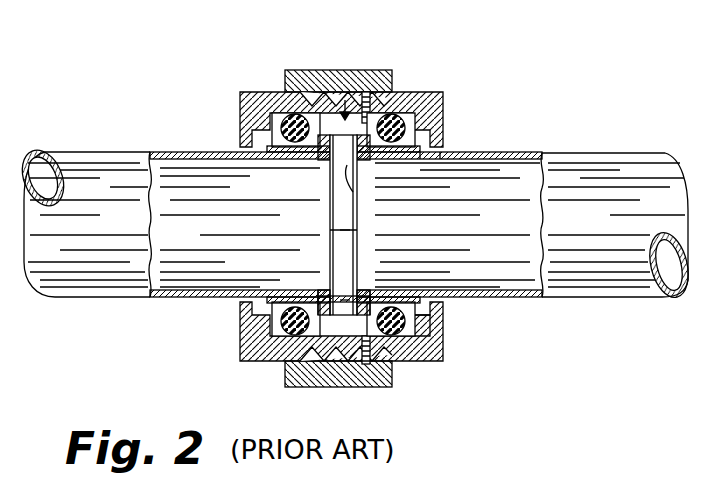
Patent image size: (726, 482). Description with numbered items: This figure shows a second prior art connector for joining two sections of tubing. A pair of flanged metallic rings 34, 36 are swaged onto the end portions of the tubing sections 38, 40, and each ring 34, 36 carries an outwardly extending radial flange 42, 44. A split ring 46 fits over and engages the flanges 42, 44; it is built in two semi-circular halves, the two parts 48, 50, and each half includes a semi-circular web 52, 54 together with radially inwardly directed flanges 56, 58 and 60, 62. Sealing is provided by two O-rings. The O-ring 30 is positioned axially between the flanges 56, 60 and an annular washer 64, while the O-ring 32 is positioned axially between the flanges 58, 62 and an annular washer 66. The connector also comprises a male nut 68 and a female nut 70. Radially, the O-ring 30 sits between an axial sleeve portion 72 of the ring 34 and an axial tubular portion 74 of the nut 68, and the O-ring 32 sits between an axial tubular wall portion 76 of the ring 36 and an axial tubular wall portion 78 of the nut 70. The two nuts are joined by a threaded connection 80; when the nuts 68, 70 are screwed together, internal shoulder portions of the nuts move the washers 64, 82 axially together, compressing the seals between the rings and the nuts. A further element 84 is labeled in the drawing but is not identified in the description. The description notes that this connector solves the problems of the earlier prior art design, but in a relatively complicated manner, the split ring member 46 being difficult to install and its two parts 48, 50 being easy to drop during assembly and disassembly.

The O-ring 30 is at (292, 118).
The O-ring 32 is at (390, 117).
The flanged metallic ring 34 is at (311, 300).
The flanged metallic ring 36 is at (390, 300).
The tubing section 38 is at (117, 300).
The tubing section 40 is at (565, 298).
The radial flange 42 is at (333, 300).
The radial flange 44 is at (357, 192).
The split ring 46 is at (347, 118).
The part of ring member 48 is at (347, 209).
The part of ring member 50 is at (345, 242).
The semi-circular web 52 is at (323, 92).
The semi-circular web 54 is at (337, 333).
The radially inwardly directed flange 56 is at (330, 193).
The radially inwardly directed flange 58 is at (441, 162).
The radially inwardly directed flange 60 is at (285, 300).
The radially inwardly directed flange 62 is at (393, 300).
The annular washer 64 is at (272, 133).
The annular washer 66 is at (413, 127).
The male nut 68 is at (242, 345).
The female nut 70 is at (434, 350).
The axial sleeve portion 72 is at (296, 160).
The axial tubular portion 74 is at (280, 348).
The axial tubular wall portion 76 is at (413, 313).
The axial tubular wall portion 78 is at (400, 363).
The threaded connection 80 is at (342, 378).
The washer 82 is at (273, 325).
The lower O-ring seal 84 is at (407, 331).